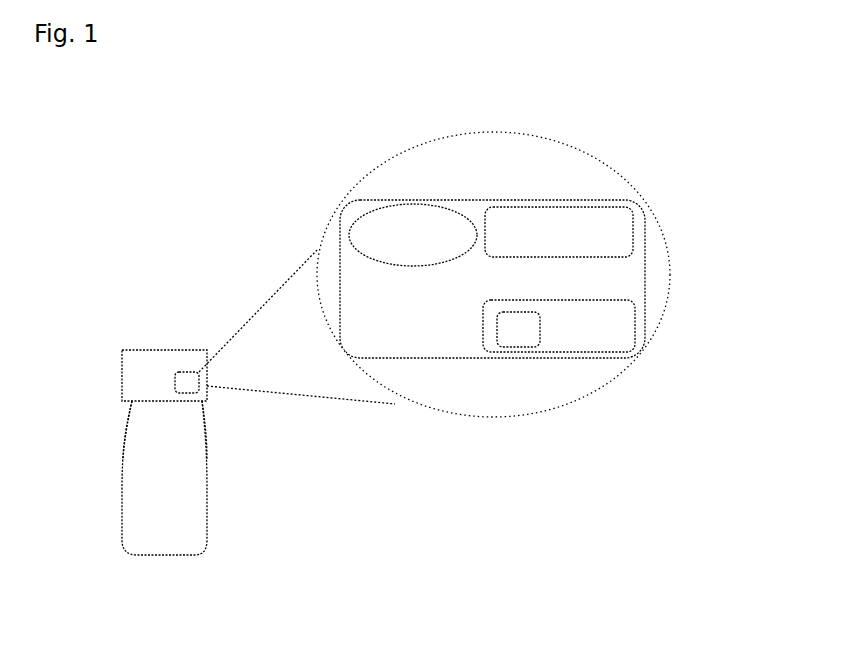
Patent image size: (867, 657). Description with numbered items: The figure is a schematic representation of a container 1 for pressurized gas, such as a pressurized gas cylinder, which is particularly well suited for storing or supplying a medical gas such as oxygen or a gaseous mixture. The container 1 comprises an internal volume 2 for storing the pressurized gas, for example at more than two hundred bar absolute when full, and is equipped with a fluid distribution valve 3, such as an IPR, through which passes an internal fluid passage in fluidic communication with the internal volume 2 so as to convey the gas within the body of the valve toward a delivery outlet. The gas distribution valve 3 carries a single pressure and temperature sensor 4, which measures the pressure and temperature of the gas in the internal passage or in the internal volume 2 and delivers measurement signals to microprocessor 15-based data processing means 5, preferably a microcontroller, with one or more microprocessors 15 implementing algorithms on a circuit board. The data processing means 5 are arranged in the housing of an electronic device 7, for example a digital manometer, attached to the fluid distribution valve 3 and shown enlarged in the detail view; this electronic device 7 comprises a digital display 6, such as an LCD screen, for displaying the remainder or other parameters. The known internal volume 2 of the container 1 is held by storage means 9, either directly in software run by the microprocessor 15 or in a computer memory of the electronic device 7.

The container 1 is at (196, 407).
The internal volume 2 is at (173, 479).
The fluid distribution valve 3 is at (158, 353).
The pressure and temperature sensor 4 is at (197, 430).
The data processing means 5 is at (593, 340).
The digital display 6 is at (638, 210).
The electronic device 7 is at (187, 380).
The storage means 9 is at (405, 235).
The microprocessor 15 is at (522, 333).